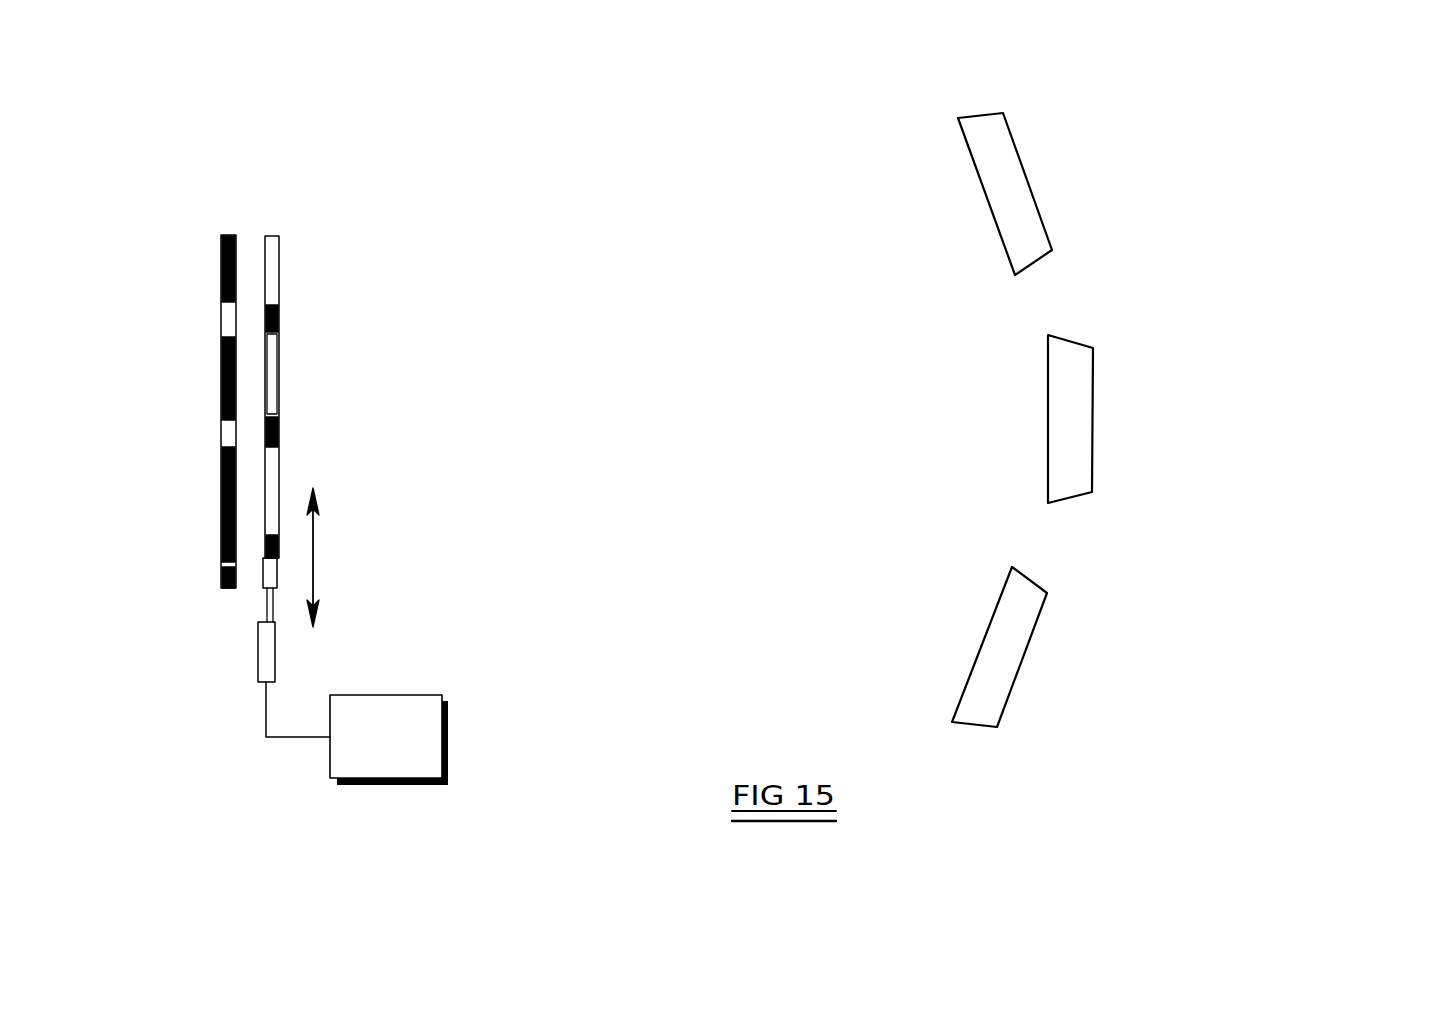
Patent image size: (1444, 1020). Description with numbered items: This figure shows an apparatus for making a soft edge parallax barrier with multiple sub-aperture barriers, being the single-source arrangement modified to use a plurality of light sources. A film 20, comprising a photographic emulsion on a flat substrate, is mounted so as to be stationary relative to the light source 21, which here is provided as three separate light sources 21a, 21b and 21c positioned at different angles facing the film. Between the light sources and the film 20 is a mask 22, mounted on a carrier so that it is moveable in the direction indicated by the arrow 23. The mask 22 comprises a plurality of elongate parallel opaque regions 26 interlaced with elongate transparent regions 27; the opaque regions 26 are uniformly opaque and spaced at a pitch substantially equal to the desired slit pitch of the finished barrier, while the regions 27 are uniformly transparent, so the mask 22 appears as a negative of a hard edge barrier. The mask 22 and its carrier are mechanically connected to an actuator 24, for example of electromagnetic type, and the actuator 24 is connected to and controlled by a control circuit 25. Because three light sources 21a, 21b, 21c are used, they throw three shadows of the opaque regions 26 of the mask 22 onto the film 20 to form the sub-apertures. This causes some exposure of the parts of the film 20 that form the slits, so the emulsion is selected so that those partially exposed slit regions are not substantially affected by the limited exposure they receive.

The film 20 is at (230, 233).
The light source 21 is at (1182, 386).
The light source 21a is at (1017, 198).
The light source 21b is at (1070, 418).
The light source 21c is at (1003, 638).
The mask 22 is at (280, 236).
The arrow 23 is at (313, 573).
The actuator 24 is at (258, 652).
The control circuit 25 is at (365, 695).
The opaque regions 26 is at (278, 323).
The transparent regions 27 is at (273, 377).